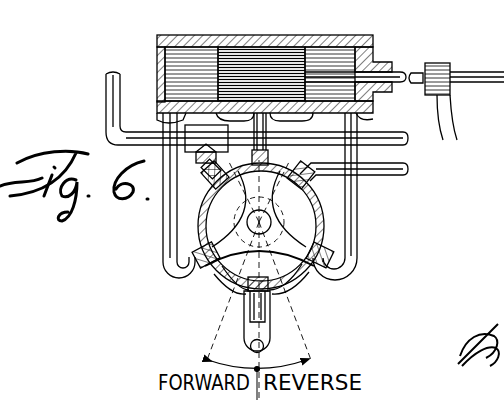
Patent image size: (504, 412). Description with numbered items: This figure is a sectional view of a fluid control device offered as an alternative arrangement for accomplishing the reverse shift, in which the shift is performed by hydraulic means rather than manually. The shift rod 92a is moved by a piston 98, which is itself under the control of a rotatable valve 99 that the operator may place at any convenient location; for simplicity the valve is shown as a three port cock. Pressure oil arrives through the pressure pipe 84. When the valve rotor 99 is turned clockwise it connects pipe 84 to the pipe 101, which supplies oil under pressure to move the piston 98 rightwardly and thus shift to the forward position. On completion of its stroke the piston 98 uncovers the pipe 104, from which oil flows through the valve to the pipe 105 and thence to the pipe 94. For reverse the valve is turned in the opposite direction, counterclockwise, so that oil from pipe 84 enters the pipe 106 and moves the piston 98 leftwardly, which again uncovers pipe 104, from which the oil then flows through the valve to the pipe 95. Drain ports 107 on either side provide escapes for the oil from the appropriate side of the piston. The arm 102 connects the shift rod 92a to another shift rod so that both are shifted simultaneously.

The piston 98 is at (268, 62).
The shift rod 92a is at (414, 74).
The arm 102 is at (445, 112).
The pipe 94 is at (106, 90).
The pipe 95 is at (407, 168).
The pipe 104 is at (267, 130).
The pipe 105 is at (163, 223).
The pipe 106 is at (354, 210).
The drain ports 107 is at (198, 258).
The pipe 101 is at (164, 288).
The rotatable valve 99 is at (284, 291).
The pressure pipe 84 is at (256, 312).